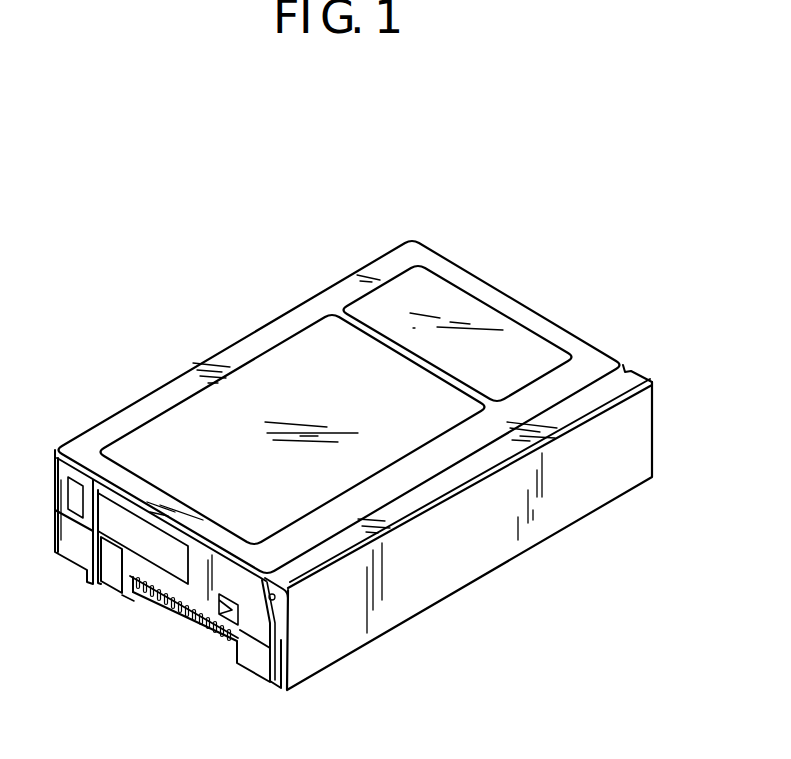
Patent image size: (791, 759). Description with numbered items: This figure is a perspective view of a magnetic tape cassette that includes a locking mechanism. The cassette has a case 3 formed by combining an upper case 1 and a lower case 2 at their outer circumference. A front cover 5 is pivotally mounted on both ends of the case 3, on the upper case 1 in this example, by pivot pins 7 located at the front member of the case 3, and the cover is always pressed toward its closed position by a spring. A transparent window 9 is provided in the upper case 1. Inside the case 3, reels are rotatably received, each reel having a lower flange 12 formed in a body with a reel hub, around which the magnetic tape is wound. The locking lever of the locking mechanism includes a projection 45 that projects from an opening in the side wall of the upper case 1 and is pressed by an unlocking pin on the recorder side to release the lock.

The upper case 1 is at (470, 316).
The case 3 is at (122, 403).
The transparent window 9 is at (512, 352).
The front cover 5 is at (637, 421).
The lower case 2 is at (78, 552).
The lower flange 12 is at (178, 620).
The projection 45 is at (236, 613).
The pivot pin 7 is at (283, 603).